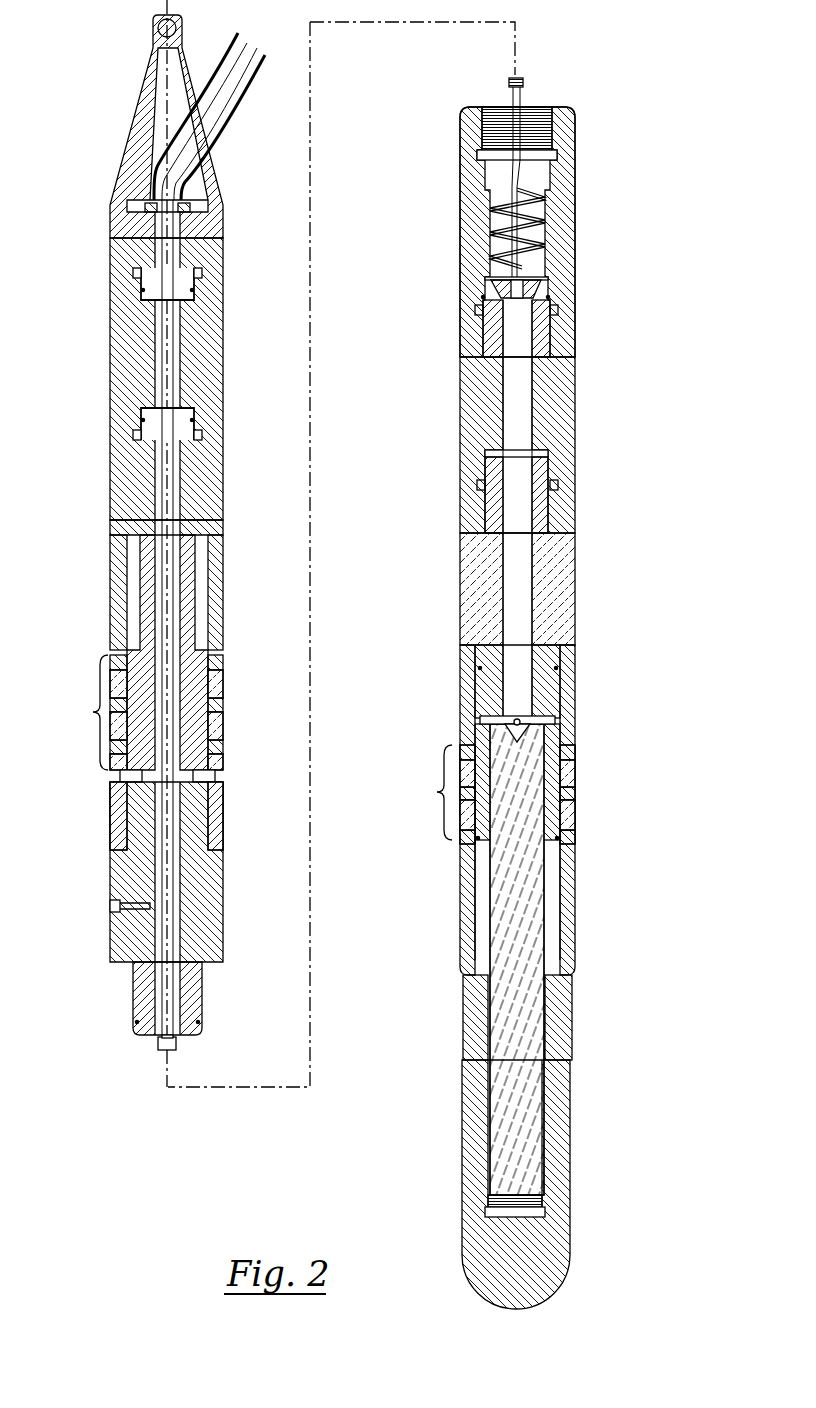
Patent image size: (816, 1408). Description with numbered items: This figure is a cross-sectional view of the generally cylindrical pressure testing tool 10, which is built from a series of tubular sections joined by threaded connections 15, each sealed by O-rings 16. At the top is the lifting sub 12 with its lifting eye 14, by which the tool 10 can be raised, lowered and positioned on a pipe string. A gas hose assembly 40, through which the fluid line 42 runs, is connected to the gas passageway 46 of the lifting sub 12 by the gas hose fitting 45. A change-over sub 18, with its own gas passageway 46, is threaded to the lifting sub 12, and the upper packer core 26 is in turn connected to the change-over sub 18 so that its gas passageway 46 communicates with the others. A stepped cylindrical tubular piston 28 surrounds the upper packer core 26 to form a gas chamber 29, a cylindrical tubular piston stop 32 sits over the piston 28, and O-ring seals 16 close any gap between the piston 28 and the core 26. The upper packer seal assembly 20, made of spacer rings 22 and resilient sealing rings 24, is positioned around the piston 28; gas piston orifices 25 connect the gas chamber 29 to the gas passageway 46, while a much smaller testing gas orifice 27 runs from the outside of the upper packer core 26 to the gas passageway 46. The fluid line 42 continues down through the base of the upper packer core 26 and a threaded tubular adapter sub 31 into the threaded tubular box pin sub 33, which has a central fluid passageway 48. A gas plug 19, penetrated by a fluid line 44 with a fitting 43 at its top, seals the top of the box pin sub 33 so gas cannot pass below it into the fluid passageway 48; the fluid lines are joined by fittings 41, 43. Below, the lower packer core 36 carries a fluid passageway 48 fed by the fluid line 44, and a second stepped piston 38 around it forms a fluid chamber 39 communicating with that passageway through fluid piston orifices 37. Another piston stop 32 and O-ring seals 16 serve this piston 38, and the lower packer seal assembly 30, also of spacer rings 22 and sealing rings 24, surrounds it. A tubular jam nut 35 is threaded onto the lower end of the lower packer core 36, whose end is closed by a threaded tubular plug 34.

The pressure testing tool 10 is at (652, 153).
The lifting sub 12 is at (130, 147).
The lifting eye 14 is at (160, 30).
The threaded connection 15 is at (542, 125).
The O-ring seal 16 is at (143, 290).
The change-over sub 18 is at (122, 365).
The gas plug 19 is at (535, 278).
The upper packer seal assembly 20 is at (79, 712).
The spacer ring 22 is at (225, 663).
The resilient sealing ring 24 is at (223, 687).
The gas piston orifice 25 is at (142, 776).
The upper packer core 26 is at (210, 900).
The testing gas orifice 27 is at (110, 906).
The stepped cylindrical tubular piston 28 is at (116, 808).
The gas chamber 29 is at (127, 782).
The lower packer seal assembly 30 is at (427, 792).
The threaded tubular adapter sub 31 is at (470, 228).
The cylindrical tubular piston stop 32 is at (117, 590).
The threaded tubular box pin sub 33 is at (473, 417).
The threaded tubular plug 34 is at (555, 1250).
The tubular jam nut 35 is at (560, 1013).
The lower packer core 36 is at (563, 578).
The fluid piston orifice 37 is at (532, 716).
The stepped cylindrical tubular piston 38 is at (470, 695).
The fluid chamber 39 is at (514, 722).
The gas hose assembly 40 is at (226, 140).
The fitting 41 is at (160, 1050).
The fluid line 42 is at (168, 995).
The fitting 43 is at (525, 82).
The fluid line 44 is at (572, 202).
The gas hose fitting 45 is at (145, 205).
The gas passageway 46 is at (242, 88).
The fluid passageway 48 is at (522, 405).